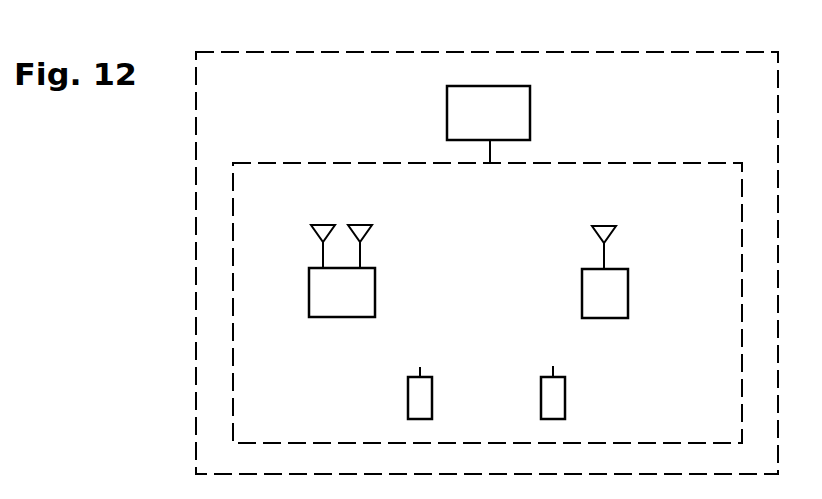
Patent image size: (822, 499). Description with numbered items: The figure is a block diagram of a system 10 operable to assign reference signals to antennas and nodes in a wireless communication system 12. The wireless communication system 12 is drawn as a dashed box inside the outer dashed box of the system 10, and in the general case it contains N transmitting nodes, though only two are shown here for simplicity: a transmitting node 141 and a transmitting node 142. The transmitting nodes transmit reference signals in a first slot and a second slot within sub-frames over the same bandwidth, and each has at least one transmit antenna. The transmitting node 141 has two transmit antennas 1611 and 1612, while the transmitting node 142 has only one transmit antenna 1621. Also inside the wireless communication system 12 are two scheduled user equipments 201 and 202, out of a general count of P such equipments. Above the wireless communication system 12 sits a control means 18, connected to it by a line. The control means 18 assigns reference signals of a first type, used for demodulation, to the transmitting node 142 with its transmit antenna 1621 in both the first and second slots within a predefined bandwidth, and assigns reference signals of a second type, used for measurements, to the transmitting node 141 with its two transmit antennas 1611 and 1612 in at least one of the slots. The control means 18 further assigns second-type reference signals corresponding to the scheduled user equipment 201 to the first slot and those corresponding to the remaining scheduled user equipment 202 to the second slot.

The system 10 is at (592, 52).
The wireless communication system 12 is at (383, 163).
The control means 18 is at (530, 110).
The transmitting node 141 is at (375, 290).
The transmitting node 142 is at (628, 293).
The transmit antenna 1611 is at (320, 224).
The transmit antenna 1612 is at (362, 225).
The transmit antenna 1621 is at (607, 226).
The scheduled user equipment 201 is at (432, 397).
The scheduled user equipment 202 is at (565, 403).